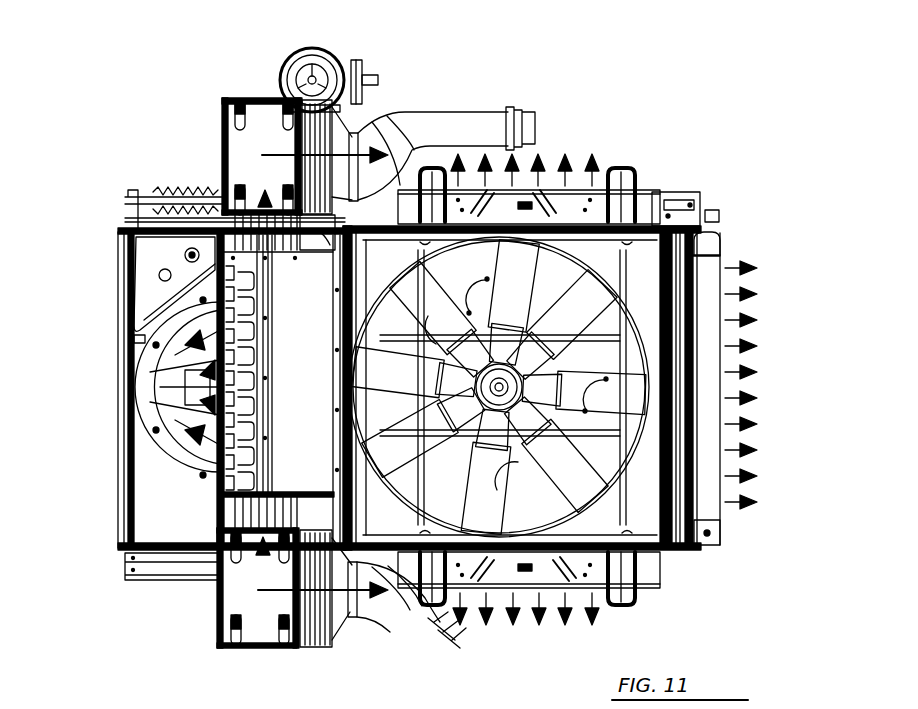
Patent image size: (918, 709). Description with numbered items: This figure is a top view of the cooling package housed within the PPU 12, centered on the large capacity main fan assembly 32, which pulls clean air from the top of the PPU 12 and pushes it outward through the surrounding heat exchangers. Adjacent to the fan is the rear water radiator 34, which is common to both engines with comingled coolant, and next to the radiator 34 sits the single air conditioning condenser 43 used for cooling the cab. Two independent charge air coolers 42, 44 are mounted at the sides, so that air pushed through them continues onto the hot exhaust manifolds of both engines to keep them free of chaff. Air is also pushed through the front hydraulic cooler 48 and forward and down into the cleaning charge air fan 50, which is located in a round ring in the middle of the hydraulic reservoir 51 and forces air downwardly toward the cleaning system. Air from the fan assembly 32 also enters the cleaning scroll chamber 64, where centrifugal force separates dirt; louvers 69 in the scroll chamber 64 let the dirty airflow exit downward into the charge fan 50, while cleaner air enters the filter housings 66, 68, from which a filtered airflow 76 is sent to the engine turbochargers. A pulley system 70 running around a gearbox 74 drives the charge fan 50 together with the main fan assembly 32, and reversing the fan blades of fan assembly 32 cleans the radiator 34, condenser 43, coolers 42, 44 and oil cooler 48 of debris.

The PPU 12 is at (134, 387).
The fan assembly 32 is at (572, 318).
The radiator 34 is at (702, 282).
The charge air cooler 42 is at (525, 578).
The air conditioning condenser 43 is at (632, 360).
The charge air cooler 44 is at (548, 200).
The hydraulic cooler 48 is at (390, 327).
The cleaning charge air fan 50 is at (160, 330).
The hydraulic reservoir 51 is at (150, 467).
The scroll chamber 64 is at (293, 443).
The filter housing 66 is at (248, 146).
The filter housing 68 is at (265, 595).
The louvers 69 is at (243, 298).
The pulley system 70 is at (287, 95).
The gearbox 74 is at (380, 78).
The filtered airflow 76 is at (263, 178).